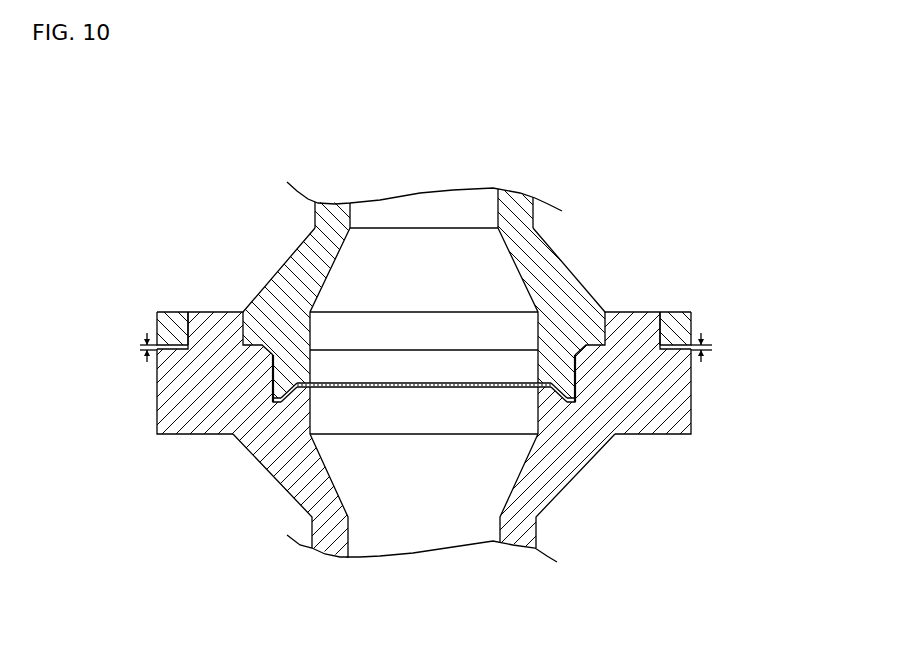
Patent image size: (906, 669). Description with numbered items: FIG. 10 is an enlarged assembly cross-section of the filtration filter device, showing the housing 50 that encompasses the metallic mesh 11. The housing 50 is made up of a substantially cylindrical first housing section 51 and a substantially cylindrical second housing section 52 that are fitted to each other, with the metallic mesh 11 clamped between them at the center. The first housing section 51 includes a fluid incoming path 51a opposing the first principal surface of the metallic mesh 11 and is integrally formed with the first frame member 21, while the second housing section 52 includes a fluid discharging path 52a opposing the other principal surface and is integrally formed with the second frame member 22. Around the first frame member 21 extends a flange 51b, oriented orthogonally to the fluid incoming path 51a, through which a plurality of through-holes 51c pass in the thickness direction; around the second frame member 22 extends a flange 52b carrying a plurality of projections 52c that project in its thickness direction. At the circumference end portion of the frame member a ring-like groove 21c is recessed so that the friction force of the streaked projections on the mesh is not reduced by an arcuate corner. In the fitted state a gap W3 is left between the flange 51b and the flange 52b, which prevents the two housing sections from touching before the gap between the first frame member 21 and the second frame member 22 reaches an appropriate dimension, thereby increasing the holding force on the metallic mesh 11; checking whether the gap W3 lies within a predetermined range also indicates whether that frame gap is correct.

The housing 50 is at (764, 235).
The first housing section 51 is at (435, 265).
The fluid incoming path 51a is at (462, 258).
The flange 51b is at (170, 324).
The through-hole 51c is at (190, 327).
The second housing section 52 is at (435, 442).
The fluid discharging path 52a is at (443, 500).
The flange 52b is at (165, 392).
The projection 52c is at (216, 322).
The first frame member 21 is at (434, 405).
The groove 21c is at (272, 400).
The second frame member 22 is at (306, 393).
The metallic mesh 11 is at (423, 388).
The gap W3 is at (423, 356).